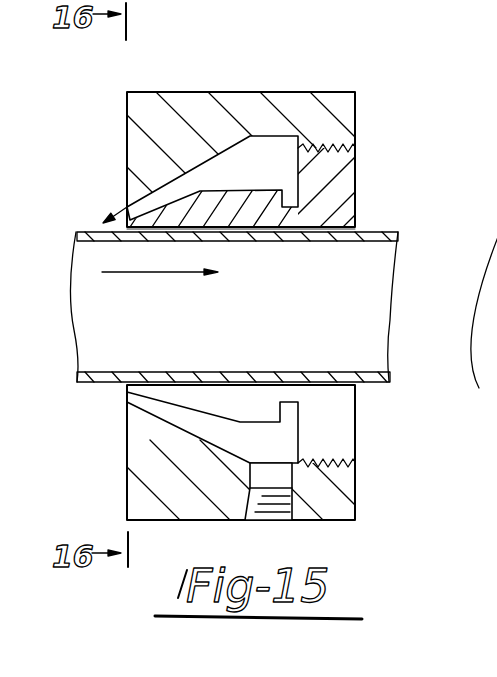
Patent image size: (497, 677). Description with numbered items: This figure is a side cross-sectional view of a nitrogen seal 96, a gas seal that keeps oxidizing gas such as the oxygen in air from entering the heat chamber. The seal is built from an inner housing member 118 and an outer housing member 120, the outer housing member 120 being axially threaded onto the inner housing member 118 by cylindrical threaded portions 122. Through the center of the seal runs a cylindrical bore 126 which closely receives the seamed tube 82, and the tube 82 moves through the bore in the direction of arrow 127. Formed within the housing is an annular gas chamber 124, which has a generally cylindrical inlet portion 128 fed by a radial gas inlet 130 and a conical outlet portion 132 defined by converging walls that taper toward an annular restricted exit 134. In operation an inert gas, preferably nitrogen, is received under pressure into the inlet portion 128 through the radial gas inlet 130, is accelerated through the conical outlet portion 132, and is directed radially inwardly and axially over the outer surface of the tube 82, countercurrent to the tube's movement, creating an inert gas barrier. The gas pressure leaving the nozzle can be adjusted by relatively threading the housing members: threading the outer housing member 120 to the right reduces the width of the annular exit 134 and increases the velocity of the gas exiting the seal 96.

The seamed tube 82 is at (242, 372).
The nitrogen seal 96 is at (362, 114).
The inner housing member 118 is at (333, 197).
The outer housing member 120 is at (173, 130).
The cylindrical threaded portions 122 is at (341, 156).
The annular gas chamber 124 is at (228, 166).
The cylindrical bore 126 is at (256, 229).
The arrow 127 is at (148, 272).
The inlet portion 128 is at (285, 442).
The radial gas inlet 130 is at (277, 513).
The conical outlet portion 132 is at (187, 415).
The annular restricted exit 134 is at (143, 398).